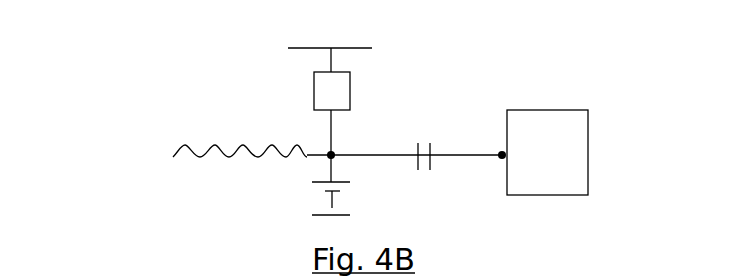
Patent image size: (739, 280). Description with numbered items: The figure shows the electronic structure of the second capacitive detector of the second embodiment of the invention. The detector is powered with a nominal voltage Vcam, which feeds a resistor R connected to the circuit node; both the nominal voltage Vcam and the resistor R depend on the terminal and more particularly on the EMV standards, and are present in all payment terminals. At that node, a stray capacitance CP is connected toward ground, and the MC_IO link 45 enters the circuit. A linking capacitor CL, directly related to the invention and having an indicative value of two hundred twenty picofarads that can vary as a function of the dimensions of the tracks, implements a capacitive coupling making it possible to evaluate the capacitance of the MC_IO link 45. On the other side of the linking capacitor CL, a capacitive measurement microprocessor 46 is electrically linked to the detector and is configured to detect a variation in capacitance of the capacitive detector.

The MC_IO link 45 is at (173, 155).
The capacitive measurement microprocessor 46 is at (575, 146).
The resistor R is at (332, 91).
The stray capacitance CP is at (353, 198).
The linking capacitor CL is at (426, 136).
The nominal voltage Vcam is at (330, 45).